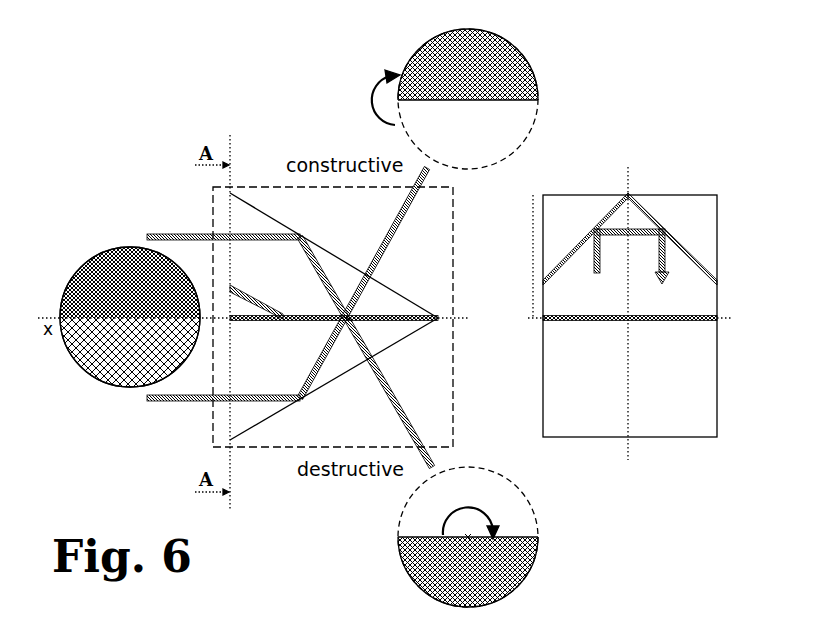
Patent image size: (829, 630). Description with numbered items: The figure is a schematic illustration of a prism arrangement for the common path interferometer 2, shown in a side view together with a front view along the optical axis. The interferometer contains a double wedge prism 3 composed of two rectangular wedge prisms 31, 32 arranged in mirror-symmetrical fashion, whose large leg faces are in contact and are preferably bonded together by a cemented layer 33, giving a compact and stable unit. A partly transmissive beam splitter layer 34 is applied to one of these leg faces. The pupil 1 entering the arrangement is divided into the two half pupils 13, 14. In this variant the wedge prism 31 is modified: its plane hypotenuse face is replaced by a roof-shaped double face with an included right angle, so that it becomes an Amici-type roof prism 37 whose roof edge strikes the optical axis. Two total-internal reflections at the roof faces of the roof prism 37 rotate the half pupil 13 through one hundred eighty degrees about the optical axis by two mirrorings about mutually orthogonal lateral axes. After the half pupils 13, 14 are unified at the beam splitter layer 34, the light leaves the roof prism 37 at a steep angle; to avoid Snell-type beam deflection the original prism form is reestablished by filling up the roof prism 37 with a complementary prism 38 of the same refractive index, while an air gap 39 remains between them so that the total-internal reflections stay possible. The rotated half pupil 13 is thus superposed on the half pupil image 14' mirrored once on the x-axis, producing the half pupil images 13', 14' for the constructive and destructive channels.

The pupil 1 is at (108, 247).
The common path interferometer 2 is at (213, 222).
The double wedge prism 3 is at (213, 378).
The half pupil 13 is at (120, 294).
The half pupil 14 is at (120, 328).
The half pupil image 13' is at (411, 96).
The half pupil image 14' is at (411, 541).
The wedge prism 31 is at (543, 258).
The wedge prism 32 is at (335, 375).
The cemented layer 33 is at (373, 307).
The partly transmissive beam splitter layer 34 is at (377, 322).
The roof prism 37 is at (333, 262).
The complementary prism 38 is at (653, 217).
The air gap 39 is at (678, 240).